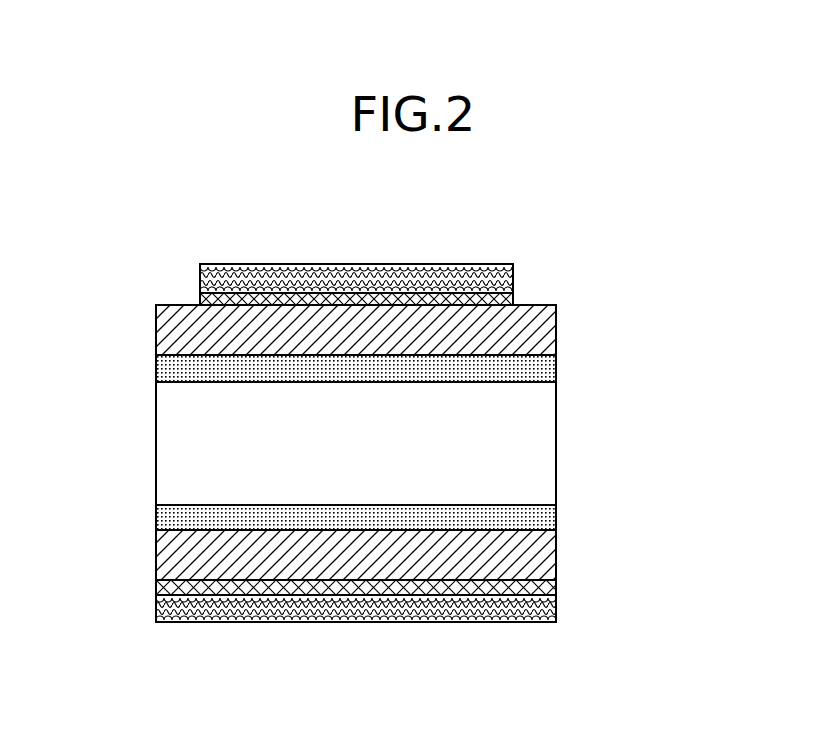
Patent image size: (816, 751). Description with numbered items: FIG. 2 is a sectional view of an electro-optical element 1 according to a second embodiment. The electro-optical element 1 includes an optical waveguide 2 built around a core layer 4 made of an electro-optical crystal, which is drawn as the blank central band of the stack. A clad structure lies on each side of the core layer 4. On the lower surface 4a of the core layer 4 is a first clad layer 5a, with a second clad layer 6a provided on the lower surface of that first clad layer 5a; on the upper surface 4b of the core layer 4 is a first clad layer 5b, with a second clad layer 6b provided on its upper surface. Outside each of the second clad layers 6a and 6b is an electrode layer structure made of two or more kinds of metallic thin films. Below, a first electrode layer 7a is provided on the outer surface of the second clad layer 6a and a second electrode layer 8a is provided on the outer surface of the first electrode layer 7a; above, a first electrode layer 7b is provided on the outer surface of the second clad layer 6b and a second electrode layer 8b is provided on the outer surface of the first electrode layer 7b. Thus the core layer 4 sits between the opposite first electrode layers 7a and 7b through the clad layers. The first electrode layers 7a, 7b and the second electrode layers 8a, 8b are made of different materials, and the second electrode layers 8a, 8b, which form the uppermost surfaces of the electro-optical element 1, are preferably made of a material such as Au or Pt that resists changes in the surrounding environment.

The electro-optical element 1 is at (376, 444).
The optical waveguide 2 is at (308, 444).
The core layer 4 is at (320, 441).
The lower surface 4a is at (398, 506).
The upper surface 4b is at (402, 382).
The first clad layer 5a is at (203, 513).
The first clad layer 5b is at (218, 372).
The second clad layer 6a is at (466, 556).
The second clad layer 6b is at (479, 330).
The first electrode layer 7a is at (267, 585).
The first electrode layer 7b is at (257, 298).
The second electrode layer 8a is at (326, 625).
The second electrode layer 8b is at (341, 263).